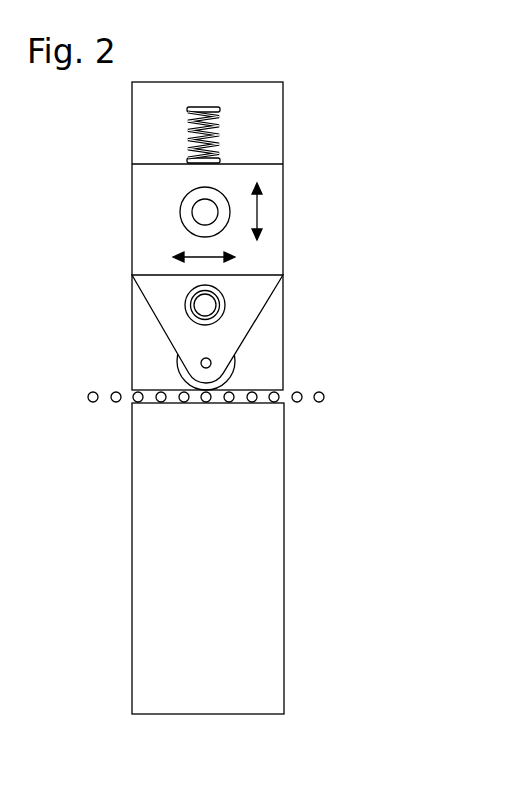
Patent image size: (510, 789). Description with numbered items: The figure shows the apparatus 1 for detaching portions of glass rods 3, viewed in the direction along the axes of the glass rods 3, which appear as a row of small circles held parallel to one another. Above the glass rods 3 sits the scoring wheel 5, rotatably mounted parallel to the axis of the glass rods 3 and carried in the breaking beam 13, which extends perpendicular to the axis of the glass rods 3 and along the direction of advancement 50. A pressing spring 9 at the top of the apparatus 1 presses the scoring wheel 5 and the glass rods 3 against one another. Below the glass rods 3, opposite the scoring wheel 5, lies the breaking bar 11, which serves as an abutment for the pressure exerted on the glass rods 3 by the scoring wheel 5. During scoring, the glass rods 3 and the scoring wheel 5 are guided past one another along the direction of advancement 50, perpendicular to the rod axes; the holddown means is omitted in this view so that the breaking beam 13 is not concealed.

The apparatus 1 is at (117, 134).
The pressing spring 9 is at (220, 132).
The direction of advancement 50 is at (196, 257).
The scoring wheel 5 is at (178, 370).
The breaking beam 13 is at (132, 298).
The glass rods 3 is at (113, 403).
The breaking bar 11 is at (132, 610).